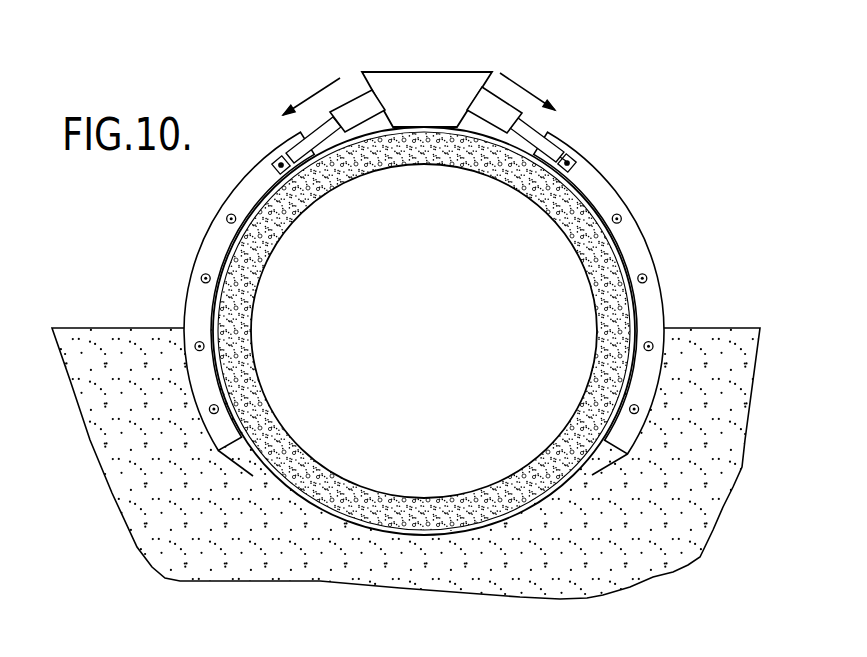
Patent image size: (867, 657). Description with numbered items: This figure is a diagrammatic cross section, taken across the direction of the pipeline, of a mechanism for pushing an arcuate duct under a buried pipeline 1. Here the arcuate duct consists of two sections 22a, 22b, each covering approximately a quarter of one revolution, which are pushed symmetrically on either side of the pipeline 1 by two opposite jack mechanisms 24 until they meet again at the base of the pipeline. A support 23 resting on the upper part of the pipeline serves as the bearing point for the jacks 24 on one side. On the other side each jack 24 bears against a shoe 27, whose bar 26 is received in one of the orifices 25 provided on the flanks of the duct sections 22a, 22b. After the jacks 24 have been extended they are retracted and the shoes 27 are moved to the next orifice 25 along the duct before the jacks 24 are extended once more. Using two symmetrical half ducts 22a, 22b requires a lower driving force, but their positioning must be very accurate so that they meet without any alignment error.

The pipeline 1 is at (572, 435).
The duct section 22a is at (184, 296).
The duct section 22b is at (650, 247).
The support 23 is at (422, 96).
The jack actuator 24 is at (345, 108).
The orifice 25 is at (227, 216).
The bar 26 is at (578, 158).
The shoe 27 is at (571, 153).